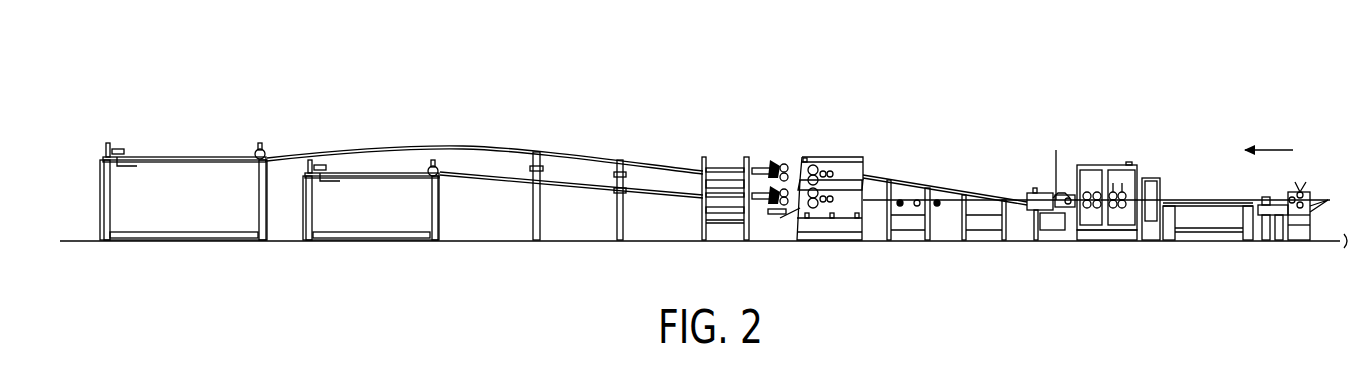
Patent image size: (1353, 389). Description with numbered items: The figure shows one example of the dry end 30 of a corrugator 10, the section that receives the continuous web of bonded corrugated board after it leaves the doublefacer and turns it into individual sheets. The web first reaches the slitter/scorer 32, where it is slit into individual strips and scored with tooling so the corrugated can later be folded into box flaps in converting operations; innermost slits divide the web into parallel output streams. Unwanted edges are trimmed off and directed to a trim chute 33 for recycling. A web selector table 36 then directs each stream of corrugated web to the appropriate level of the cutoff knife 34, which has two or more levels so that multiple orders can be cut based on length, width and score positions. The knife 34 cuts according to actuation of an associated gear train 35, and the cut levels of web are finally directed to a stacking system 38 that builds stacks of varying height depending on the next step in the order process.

The corrugator 10 is at (238, 60).
The dry end 30 is at (988, 102).
The slitter/scorer 32 is at (1112, 153).
The trim chute 33 is at (1073, 212).
The cutoff knife 34 is at (835, 198).
The gear train 35 is at (813, 218).
The web selector table 36 is at (1048, 182).
The stacking system 38 is at (727, 145).